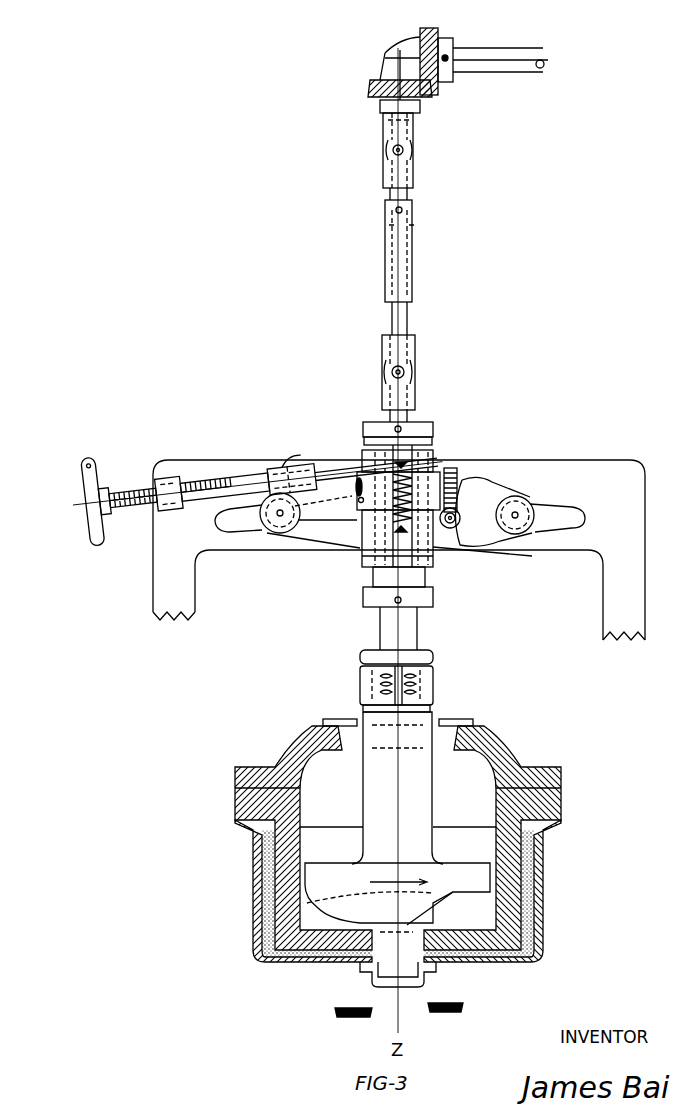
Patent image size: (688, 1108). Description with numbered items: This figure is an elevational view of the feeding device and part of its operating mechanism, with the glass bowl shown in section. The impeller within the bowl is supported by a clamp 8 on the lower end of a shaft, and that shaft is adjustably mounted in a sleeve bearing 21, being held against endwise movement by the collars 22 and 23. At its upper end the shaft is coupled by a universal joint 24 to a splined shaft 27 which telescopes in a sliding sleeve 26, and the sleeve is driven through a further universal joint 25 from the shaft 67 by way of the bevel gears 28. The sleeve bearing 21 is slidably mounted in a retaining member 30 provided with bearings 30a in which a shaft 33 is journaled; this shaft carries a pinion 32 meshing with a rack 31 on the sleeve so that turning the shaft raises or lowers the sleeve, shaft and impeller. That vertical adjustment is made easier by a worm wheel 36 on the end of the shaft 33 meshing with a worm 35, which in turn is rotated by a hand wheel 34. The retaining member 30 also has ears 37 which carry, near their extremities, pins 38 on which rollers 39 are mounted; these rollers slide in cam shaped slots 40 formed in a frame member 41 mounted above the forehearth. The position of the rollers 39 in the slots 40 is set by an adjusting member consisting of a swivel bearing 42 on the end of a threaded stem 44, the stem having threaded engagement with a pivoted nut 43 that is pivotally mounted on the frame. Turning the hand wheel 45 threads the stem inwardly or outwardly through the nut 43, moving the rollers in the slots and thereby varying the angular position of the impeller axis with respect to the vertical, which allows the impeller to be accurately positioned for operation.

The clamp 8 is at (417, 630).
The sleeve bearing 21 is at (373, 580).
The collar 22 is at (373, 612).
The collar 23 is at (367, 422).
The universal joint 24 is at (422, 413).
The universal joint 25 is at (380, 123).
The sliding sleeve 26 is at (385, 236).
The splined shaft 27 is at (392, 320).
The bevel gears 28 is at (420, 38).
The retaining member 30 is at (363, 558).
The bearings 30a is at (360, 503).
The rack 31 is at (402, 533).
The pinion 32 is at (420, 480).
The shaft 33 is at (358, 480).
The hand wheel 34 is at (490, 543).
The worm 35 is at (463, 547).
The worm wheel 36 is at (460, 475).
The ears 37 is at (308, 542).
The pins 38 is at (280, 527).
The rollers 39 is at (263, 528).
The cam shaped slots 40 is at (233, 507).
The frame member 41 is at (245, 478).
The swivel bearing 42 is at (305, 467).
The pivoted nut 43 is at (173, 480).
The threaded stem 44 is at (127, 492).
The hand wheel 45 is at (90, 460).
The shaft 67 is at (475, 53).